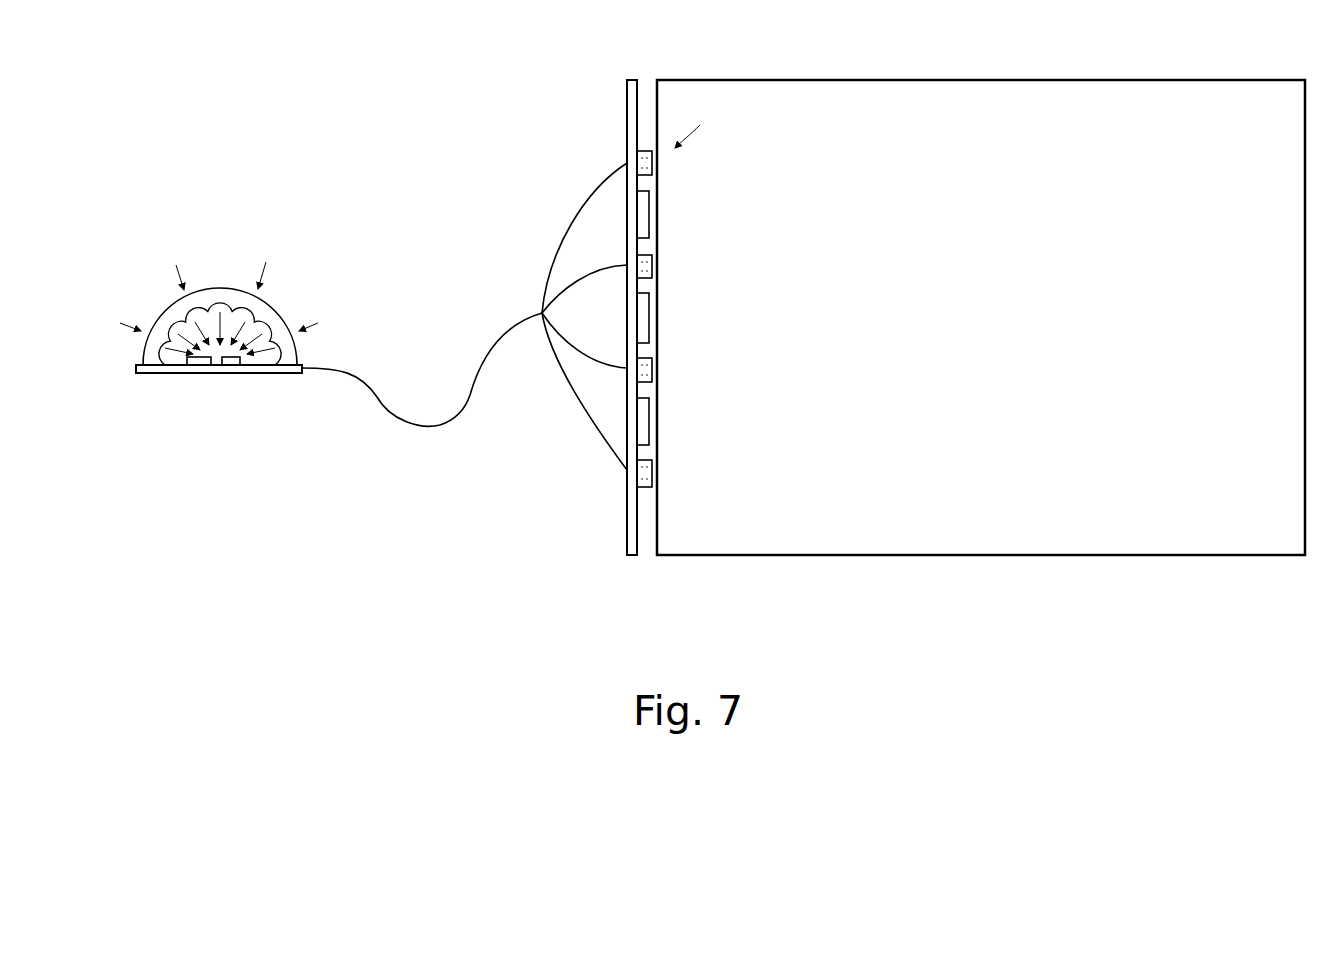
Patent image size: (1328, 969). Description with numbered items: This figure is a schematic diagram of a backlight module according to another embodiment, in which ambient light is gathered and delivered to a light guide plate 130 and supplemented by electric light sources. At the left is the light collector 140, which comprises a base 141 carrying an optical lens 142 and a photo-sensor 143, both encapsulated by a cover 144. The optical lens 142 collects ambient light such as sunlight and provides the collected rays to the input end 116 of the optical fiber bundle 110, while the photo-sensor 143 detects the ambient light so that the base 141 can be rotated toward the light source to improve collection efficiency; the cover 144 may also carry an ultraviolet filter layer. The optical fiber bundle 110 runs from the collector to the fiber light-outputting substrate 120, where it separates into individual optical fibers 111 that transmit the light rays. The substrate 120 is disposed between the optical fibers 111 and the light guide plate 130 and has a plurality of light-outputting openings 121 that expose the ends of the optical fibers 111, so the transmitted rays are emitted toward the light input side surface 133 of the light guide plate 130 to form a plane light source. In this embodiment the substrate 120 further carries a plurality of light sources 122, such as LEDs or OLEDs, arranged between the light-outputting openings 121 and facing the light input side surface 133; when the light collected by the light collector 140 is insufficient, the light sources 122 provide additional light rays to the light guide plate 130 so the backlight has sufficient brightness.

The optical fiber bundle 110 is at (460, 408).
The optical fibers 111 is at (607, 170).
The input end 116 is at (232, 362).
The fiber light-outputting substrate 120 is at (634, 532).
The light-outputting openings 121 is at (643, 490).
The light sources 122 is at (645, 427).
The light guide plate 130 is at (938, 538).
The light input side surface 133 is at (700, 125).
The light collector 140 is at (226, 305).
The base 141 is at (165, 370).
The optical lens 142 is at (207, 296).
The photo-sensor 143 is at (198, 362).
The cover 144 is at (280, 313).